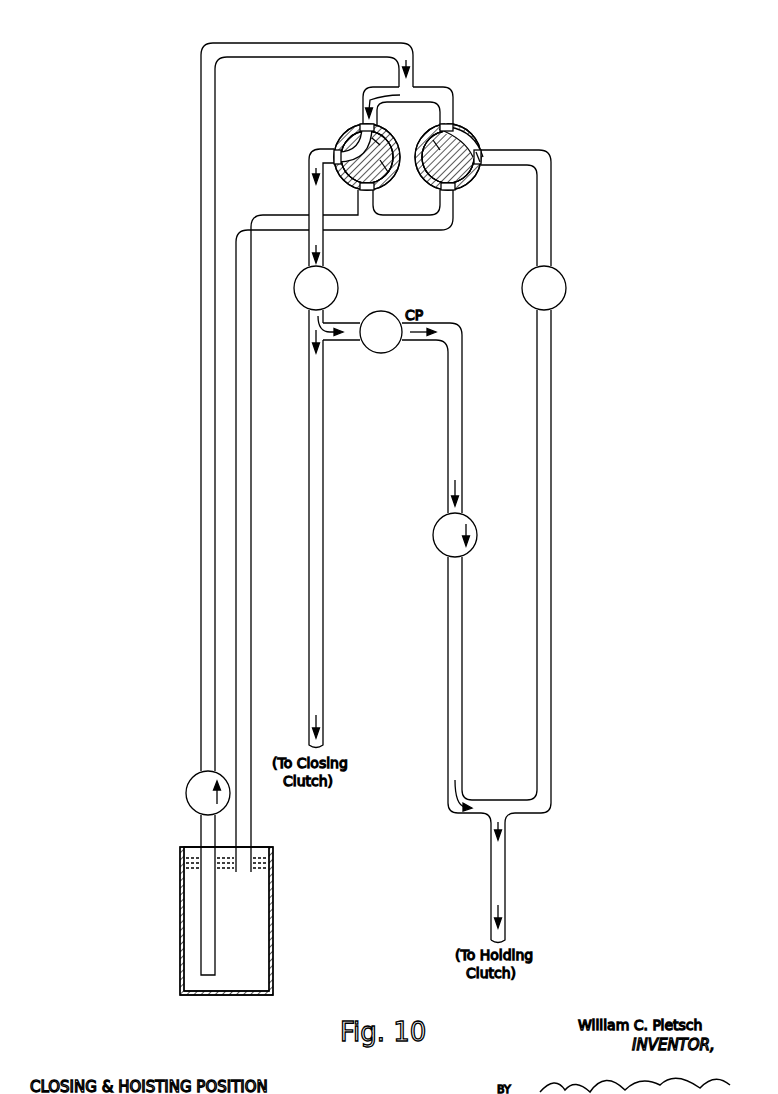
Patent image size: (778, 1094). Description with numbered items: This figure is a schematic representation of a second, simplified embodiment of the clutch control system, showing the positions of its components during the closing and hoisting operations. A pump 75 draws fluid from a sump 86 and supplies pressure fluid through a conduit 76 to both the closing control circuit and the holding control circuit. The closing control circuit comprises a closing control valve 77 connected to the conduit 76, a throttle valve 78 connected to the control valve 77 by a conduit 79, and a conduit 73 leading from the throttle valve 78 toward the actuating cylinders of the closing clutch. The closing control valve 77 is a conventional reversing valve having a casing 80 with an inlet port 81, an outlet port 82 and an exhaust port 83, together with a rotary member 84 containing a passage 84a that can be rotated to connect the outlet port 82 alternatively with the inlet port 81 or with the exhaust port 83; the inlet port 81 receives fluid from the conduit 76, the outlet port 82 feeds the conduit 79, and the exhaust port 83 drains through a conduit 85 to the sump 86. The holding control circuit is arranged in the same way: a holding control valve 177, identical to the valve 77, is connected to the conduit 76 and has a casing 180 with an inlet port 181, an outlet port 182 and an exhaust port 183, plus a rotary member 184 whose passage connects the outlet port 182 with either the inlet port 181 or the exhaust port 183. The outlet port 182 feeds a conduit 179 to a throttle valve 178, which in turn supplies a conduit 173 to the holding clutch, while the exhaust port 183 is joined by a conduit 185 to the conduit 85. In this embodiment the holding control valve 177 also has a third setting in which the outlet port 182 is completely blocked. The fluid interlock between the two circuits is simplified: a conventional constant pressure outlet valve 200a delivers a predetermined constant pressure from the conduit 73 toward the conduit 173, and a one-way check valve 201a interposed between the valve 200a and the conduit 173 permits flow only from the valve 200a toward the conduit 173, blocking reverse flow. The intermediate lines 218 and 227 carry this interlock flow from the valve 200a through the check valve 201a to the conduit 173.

The conduit 73 is at (318, 637).
The pump 75 is at (187, 793).
The conduit 76 is at (287, 50).
The closing control valve 77 is at (325, 147).
The throttle valve 78 is at (302, 283).
The conduit 79 is at (309, 203).
The casing 80 is at (362, 126).
The inlet port 81 is at (372, 132).
The outlet port 82 is at (338, 166).
The exhaust port 83 is at (368, 188).
The rotary member 84 is at (386, 168).
The passage 84a is at (375, 142).
The conduit 85 is at (346, 222).
The sump 86 is at (248, 923).
The conduit 173 is at (545, 639).
The holding control valve 177 is at (543, 160).
The throttle valve 178 is at (566, 288).
The conduit 179 is at (541, 215).
The casing 180 is at (481, 148).
The inlet port 181 is at (455, 126).
The outlet port 182 is at (482, 162).
The exhaust port 183 is at (455, 194).
The rotary member 184 is at (437, 141).
The conduit 185 is at (414, 222).
The constant pressure outlet valve 200a is at (380, 353).
The one-way check valve 201a is at (434, 529).
The pipe 218 is at (455, 451).
The pipe 227 is at (455, 684).